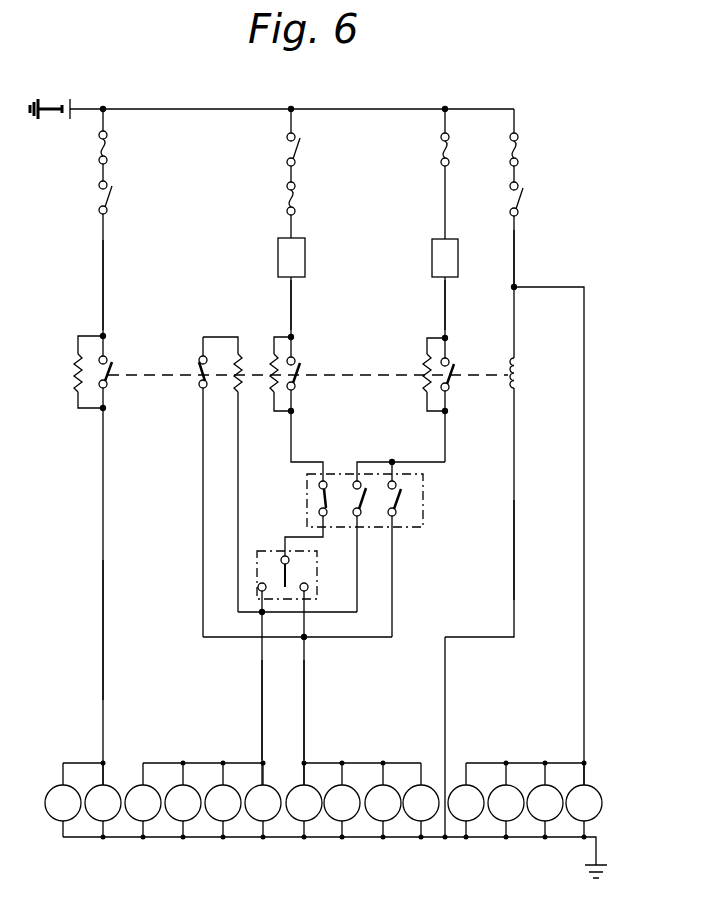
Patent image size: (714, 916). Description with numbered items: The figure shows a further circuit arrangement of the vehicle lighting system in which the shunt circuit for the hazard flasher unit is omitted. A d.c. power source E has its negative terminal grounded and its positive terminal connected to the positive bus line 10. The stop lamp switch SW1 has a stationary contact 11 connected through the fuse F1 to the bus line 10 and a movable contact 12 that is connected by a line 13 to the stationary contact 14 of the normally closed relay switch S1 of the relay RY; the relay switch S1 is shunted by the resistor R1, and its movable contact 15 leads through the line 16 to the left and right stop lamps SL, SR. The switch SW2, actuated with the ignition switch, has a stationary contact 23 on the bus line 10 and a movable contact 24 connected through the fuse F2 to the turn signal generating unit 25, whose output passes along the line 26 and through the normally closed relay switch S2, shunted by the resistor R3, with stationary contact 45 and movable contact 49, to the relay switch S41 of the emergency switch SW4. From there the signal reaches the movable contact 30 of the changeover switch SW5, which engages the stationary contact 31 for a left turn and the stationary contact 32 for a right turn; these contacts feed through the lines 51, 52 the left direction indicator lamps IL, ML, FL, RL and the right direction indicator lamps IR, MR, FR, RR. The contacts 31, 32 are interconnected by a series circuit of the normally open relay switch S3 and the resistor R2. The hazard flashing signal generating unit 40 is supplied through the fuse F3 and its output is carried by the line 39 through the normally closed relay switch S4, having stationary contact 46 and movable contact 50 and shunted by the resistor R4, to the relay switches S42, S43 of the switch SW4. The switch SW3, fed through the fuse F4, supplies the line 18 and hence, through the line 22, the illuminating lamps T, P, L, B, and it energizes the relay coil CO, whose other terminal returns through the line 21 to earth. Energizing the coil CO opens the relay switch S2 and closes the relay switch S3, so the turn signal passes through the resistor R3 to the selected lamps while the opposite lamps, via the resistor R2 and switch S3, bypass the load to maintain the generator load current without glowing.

The d.c. power source E is at (70, 99).
The positive bus line 10 is at (362, 109).
The fuse F1 is at (107, 150).
The stationary contact 11 is at (99, 185).
The movable contact 12 is at (99, 210).
The stop lamp switch SW1 is at (110, 197).
The line 13 is at (103, 290).
The stationary contact 14 is at (106, 358).
The resistor R1 is at (75, 374).
The normally closed relay switch S1 is at (113, 372).
The movable contact 15 is at (106, 391).
The line 16 is at (103, 636).
The stationary contact 23 is at (287, 137).
The movable contact 24 is at (287, 162).
The switch SW2 is at (298, 152).
The fuse F2 is at (296, 200).
The turn signal generating unit 25 is at (305, 273).
The line 26 is at (292, 306).
The normally open relay switch S3 is at (199, 374).
The resistor R2 is at (236, 396).
The resistor R3 is at (271, 396).
The stationary contact 45 is at (294, 359).
The normally closed relay switch S2 is at (301, 372).
The movable contact 49 is at (294, 391).
The relay RY is at (381, 347).
The relay switch S42 is at (364, 480).
The normally closed relay switch S41 is at (311, 498).
The relay switch S43 is at (408, 494).
The switch SW4 is at (423, 516).
The movable contact 30 is at (283, 555).
The stationary contact 31 is at (258, 588).
The stationary contact 32 is at (307, 591).
The changeover switch SW5 is at (318, 560).
The line 51 is at (262, 714).
The line 52 is at (304, 720).
The fuse F3 is at (449, 152).
The fuse F4 is at (518, 152).
The switch SW3 is at (521, 203).
The line 18 is at (515, 266).
The hazard flashing signal generating unit 40 is at (458, 274).
The line 39 is at (446, 307).
The stationary contact 46 is at (448, 359).
The resistor R4 is at (425, 386).
The normally closed relay switch S4 is at (455, 373).
The movable contact 50 is at (448, 392).
The relay coil CO is at (516, 386).
The line 21 is at (514, 550).
The line 22 is at (584, 610).
The left stop lamp SL is at (63, 803).
The right stop lamp SR is at (103, 803).
The left turn indicator lamp IL is at (143, 803).
The left turn indicator lamp ML is at (183, 803).
The left turn indicator lamp FL is at (223, 803).
The left rear turn indicator lamp RL is at (263, 803).
The right rear turn indicator lamp RR is at (304, 803).
The right turn indicator lamp FR is at (342, 803).
The right turn indicator lamp MR is at (383, 803).
The right turn indicator lamp IR is at (421, 803).
The tail lamp T is at (466, 803).
The side lamp P is at (506, 803).
The licence lamp L is at (545, 803).
The illuminating lamp B is at (584, 803).